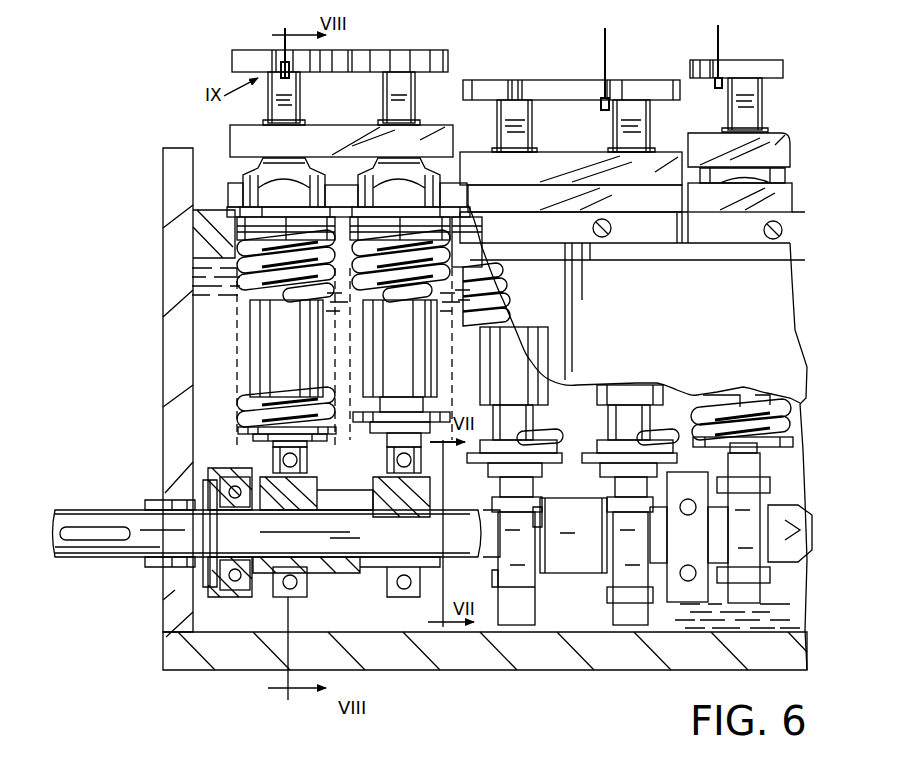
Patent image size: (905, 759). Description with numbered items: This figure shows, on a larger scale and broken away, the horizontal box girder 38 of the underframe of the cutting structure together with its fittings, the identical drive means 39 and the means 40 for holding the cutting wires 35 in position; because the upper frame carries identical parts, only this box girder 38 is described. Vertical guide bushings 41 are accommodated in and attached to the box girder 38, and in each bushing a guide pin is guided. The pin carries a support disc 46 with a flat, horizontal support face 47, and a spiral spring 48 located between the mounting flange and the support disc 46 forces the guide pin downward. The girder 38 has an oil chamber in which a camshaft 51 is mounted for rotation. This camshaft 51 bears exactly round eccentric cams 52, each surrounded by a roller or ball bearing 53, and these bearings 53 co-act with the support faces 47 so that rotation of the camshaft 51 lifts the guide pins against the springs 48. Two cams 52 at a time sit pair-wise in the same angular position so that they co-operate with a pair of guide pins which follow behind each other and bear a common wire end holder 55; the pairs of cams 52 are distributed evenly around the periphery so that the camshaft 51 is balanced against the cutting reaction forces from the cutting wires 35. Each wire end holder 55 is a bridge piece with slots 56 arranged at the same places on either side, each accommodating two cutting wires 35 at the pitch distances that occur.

The cutting wires 35 is at (284, 27).
The slots 56 is at (375, 50).
The wire end holder 55 is at (580, 82).
The means for holding cutting wires in position 40 is at (218, 146).
The spiral spring 48 is at (192, 275).
The guide bushings 41 is at (262, 327).
The support disc 46 is at (246, 427).
The support face 47 is at (258, 452).
The roller or ball bearings 53 is at (304, 462).
The eccentric cams 52 is at (372, 493).
The camshaft 51 is at (265, 540).
The drive means 39 is at (340, 575).
The box girder 38 is at (683, 674).